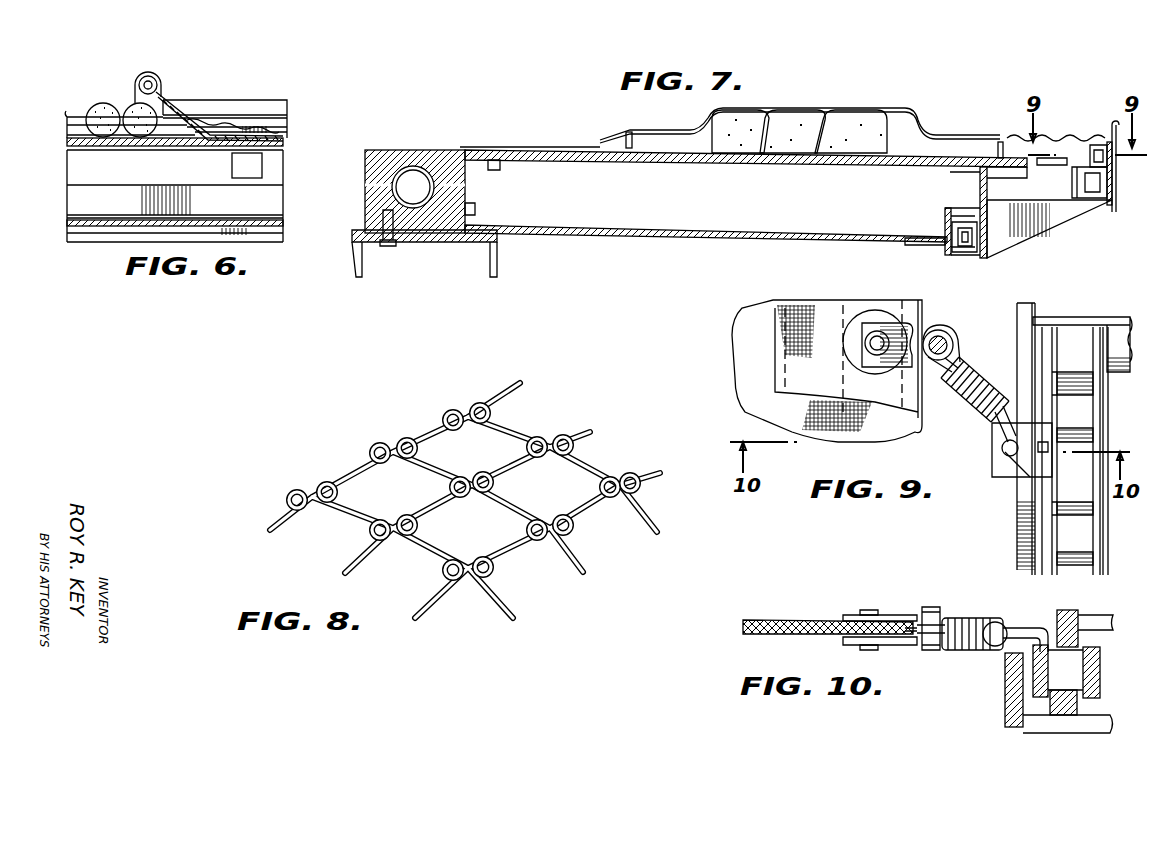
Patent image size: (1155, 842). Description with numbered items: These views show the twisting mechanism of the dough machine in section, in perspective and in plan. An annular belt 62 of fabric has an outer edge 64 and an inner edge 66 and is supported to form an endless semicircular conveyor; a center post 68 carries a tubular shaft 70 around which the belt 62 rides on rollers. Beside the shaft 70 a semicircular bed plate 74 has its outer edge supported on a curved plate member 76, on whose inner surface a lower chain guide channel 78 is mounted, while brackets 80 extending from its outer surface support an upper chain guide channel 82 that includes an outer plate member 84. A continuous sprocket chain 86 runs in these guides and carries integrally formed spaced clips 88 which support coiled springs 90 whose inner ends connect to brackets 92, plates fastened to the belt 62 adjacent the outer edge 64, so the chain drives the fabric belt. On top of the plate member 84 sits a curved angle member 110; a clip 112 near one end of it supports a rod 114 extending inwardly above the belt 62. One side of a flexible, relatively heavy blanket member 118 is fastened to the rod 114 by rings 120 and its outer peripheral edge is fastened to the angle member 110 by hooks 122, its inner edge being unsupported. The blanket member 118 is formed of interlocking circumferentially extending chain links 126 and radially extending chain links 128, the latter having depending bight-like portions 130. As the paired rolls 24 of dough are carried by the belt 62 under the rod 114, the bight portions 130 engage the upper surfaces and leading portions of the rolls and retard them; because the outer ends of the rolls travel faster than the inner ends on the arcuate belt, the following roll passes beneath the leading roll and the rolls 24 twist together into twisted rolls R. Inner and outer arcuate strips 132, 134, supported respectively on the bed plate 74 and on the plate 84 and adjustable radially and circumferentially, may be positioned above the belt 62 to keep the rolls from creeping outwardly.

In FIG. 6, the rolls of dough 24 is at (128, 108).
In FIG. 6, the annular belt 62 is at (75, 128).
In FIG. 7, the annular belt 62 is at (682, 235).
In FIG. 9, the annular belt 62 is at (748, 333).
In FIG. 10, the annular belt 62 is at (775, 600).
In FIG. 7, the outer edge 64 is at (1045, 182).
In FIG. 9, the outer edge 64 is at (922, 432).
In FIG. 10, the outer edge 64 is at (912, 648).
In FIG. 7, the inner edge 66 is at (553, 148).
In FIG. 7, the center post 68 is at (395, 152).
In FIG. 7, the tubular shaft 70 is at (416, 168).
In FIG. 6, the bed plate 74 is at (282, 150).
In FIG. 7, the bed plate 74 is at (513, 152).
In FIG. 6, the curved plate member 76 is at (279, 175).
In FIG. 7, the curved plate member 76 is at (990, 183).
In FIG. 6, the lower chain guide channel 78 is at (272, 204).
In FIG. 7, the lower chain guide channel 78 is at (943, 212).
In FIG. 7, the brackets 80 is at (1018, 237).
In FIG. 7, the upper chain guide channel 82 is at (1112, 195).
In FIG. 9, the upper chain guide channel 82 is at (1017, 535).
In FIG. 10, the upper chain guide channel 82 is at (1003, 717).
In FIG. 7, the outer plate member 84 is at (1108, 166).
In FIG. 7, the sprocket chain 86 is at (1092, 223).
In FIG. 9, the sprocket chain 86 is at (1095, 418).
In FIG. 10, the sprocket chain 86 is at (1070, 660).
In FIG. 9, the clips 88 is at (1000, 465).
In FIG. 10, the clips 88 is at (1037, 628).
In FIG. 9, the coiled springs 90 is at (987, 392).
In FIG. 10, the coiled springs 90 is at (970, 618).
In FIG. 9, the brackets 92 is at (945, 320).
In FIG. 10, the brackets 92 is at (914, 622).
In FIG. 6, the curved angle member 110 is at (262, 122).
In FIG. 7, the curved angle member 110 is at (1113, 120).
In FIG. 6, the clip 112 is at (157, 80).
In FIG. 6, the rod 114 is at (148, 76).
In FIG. 6, the blanket member 118 is at (187, 120).
In FIG. 7, the blanket member 118 is at (940, 135).
In FIG. 6, the rings 120 is at (162, 90).
In FIG. 7, the hooks 122 is at (1078, 128).
In FIG. 8, the circumferentially extending chain links 126 is at (480, 588).
In FIG. 8, the radially extending chain links 128 is at (502, 565).
In FIG. 8, the bight-like portions 130 is at (595, 548).
In FIG. 7, the inner arcuate strip 132 is at (635, 140).
In FIG. 7, the outer arcuate strip 134 is at (997, 148).
In FIG. 7, the twisted rolls R is at (850, 130).